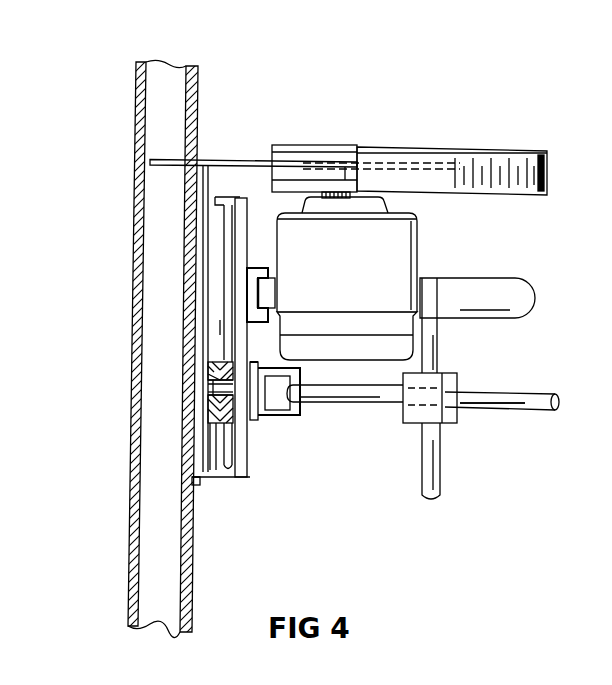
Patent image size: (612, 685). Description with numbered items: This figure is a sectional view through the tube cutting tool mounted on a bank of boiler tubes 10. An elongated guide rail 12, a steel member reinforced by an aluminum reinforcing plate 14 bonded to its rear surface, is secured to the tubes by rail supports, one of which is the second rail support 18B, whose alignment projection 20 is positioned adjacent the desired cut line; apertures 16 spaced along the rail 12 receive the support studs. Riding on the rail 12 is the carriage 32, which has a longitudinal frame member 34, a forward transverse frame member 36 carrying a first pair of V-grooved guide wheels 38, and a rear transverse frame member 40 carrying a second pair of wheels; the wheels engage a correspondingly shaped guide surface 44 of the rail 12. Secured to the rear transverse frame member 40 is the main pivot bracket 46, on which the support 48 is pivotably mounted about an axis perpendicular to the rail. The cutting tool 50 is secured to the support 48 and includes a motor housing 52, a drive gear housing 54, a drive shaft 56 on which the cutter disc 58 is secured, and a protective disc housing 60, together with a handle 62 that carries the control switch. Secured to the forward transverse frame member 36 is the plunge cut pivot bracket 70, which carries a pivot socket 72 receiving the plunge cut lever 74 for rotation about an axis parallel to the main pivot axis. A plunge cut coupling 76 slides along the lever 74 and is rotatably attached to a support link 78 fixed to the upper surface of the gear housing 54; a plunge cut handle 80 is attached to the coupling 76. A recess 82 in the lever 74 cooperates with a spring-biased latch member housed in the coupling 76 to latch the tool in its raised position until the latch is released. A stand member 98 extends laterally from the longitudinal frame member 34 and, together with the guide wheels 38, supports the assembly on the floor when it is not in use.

The bank of boiler tubes 10 is at (122, 230).
The guide rail 12 is at (208, 357).
The aluminum reinforcing plate 14 is at (210, 398).
The apertures 16 is at (212, 386).
The second rail support 18B is at (206, 500).
The alignment projection 20 is at (212, 181).
The carriage 32 is at (258, 425).
The longitudinal frame member 34 is at (253, 445).
The forward transverse frame member 36 is at (240, 320).
The guide wheels 38 is at (222, 330).
The rear transverse frame member 40 is at (243, 268).
The guide surface 44 is at (212, 355).
The main pivot bracket 46 is at (265, 270).
The support 48 is at (266, 288).
The cutting tool 50 is at (432, 257).
The motor housing 52 is at (340, 352).
The drive gear housing 54 is at (385, 240).
The drive shaft 56 is at (347, 185).
The cutter disc 58 is at (224, 160).
The protective disc housing 60 is at (455, 147).
The handle 62 is at (522, 287).
The plunge cut pivot bracket 70 is at (268, 432).
The pivot socket 72 is at (302, 410).
The plunge cut lever 74 is at (505, 395).
The plunge cut coupling 76 is at (445, 425).
The support link 78 is at (437, 355).
The plunge cut handle 80 is at (441, 497).
The recess 82 is at (518, 410).
The stand member 98 is at (238, 199).